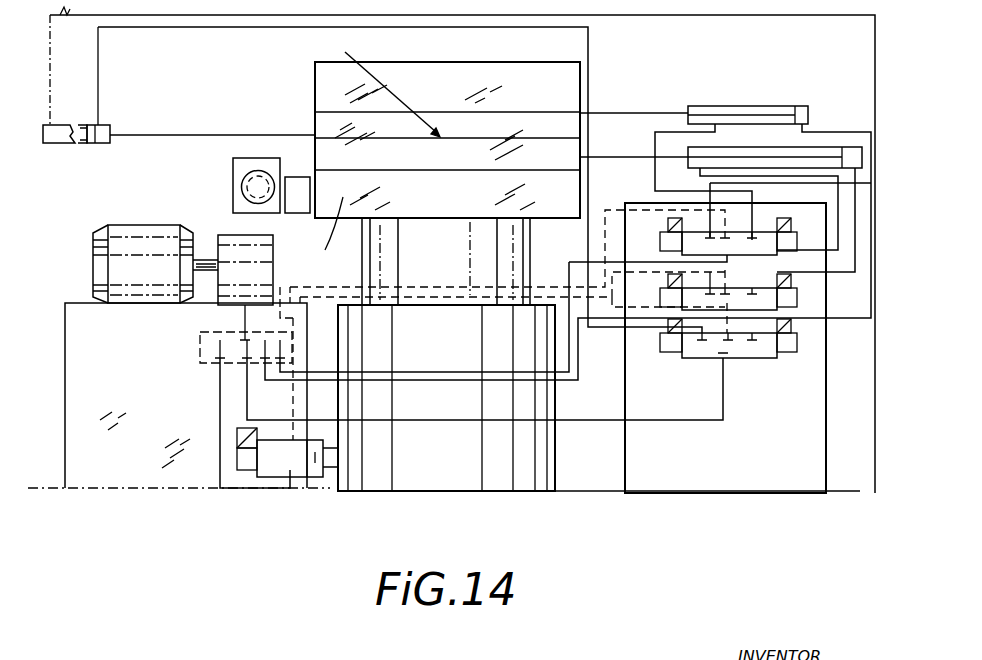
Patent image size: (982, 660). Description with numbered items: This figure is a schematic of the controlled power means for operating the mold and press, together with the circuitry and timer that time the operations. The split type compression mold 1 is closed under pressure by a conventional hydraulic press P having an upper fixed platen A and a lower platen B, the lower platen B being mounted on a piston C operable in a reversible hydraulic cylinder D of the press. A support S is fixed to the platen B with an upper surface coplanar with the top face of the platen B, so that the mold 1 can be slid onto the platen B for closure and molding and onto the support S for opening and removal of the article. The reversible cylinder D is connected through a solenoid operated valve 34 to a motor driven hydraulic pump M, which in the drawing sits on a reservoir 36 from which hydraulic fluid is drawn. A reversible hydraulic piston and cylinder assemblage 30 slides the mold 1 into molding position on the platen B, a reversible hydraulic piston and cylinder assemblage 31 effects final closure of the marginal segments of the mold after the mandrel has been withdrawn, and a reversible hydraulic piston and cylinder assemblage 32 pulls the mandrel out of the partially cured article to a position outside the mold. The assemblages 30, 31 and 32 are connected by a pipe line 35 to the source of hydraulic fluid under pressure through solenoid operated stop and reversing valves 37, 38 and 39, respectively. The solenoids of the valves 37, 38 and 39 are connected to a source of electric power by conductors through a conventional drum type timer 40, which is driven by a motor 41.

The compression mold 1 is at (386, 87).
The reversible hydraulic piston and cylinder assemblage 30 is at (827, 147).
The reversible hydraulic piston and cylinder assemblage 31 is at (783, 106).
The reversible hydraulic piston and cylinder assemblage 32 is at (68, 125).
The solenoid operated valve 34 is at (278, 477).
The pipe line 35 is at (418, 370).
The oil reservoir 36 is at (90, 402).
The solenoid operated stop and reversing valve 37 is at (763, 242).
The solenoid operated stop and reversing valve 38 is at (763, 293).
The solenoid operated stop and reversing valve 39 is at (760, 350).
The timer 40 is at (258, 172).
The motor 41 is at (248, 178).
The upper fixed platen A is at (585, 65).
The lower platen B is at (323, 236).
The piston C is at (527, 261).
The reversible hydraulic cylinder D is at (547, 450).
The motor driven hydraulic pump M is at (163, 238).
The hydraulic press P is at (235, 238).
The support S is at (297, 195).